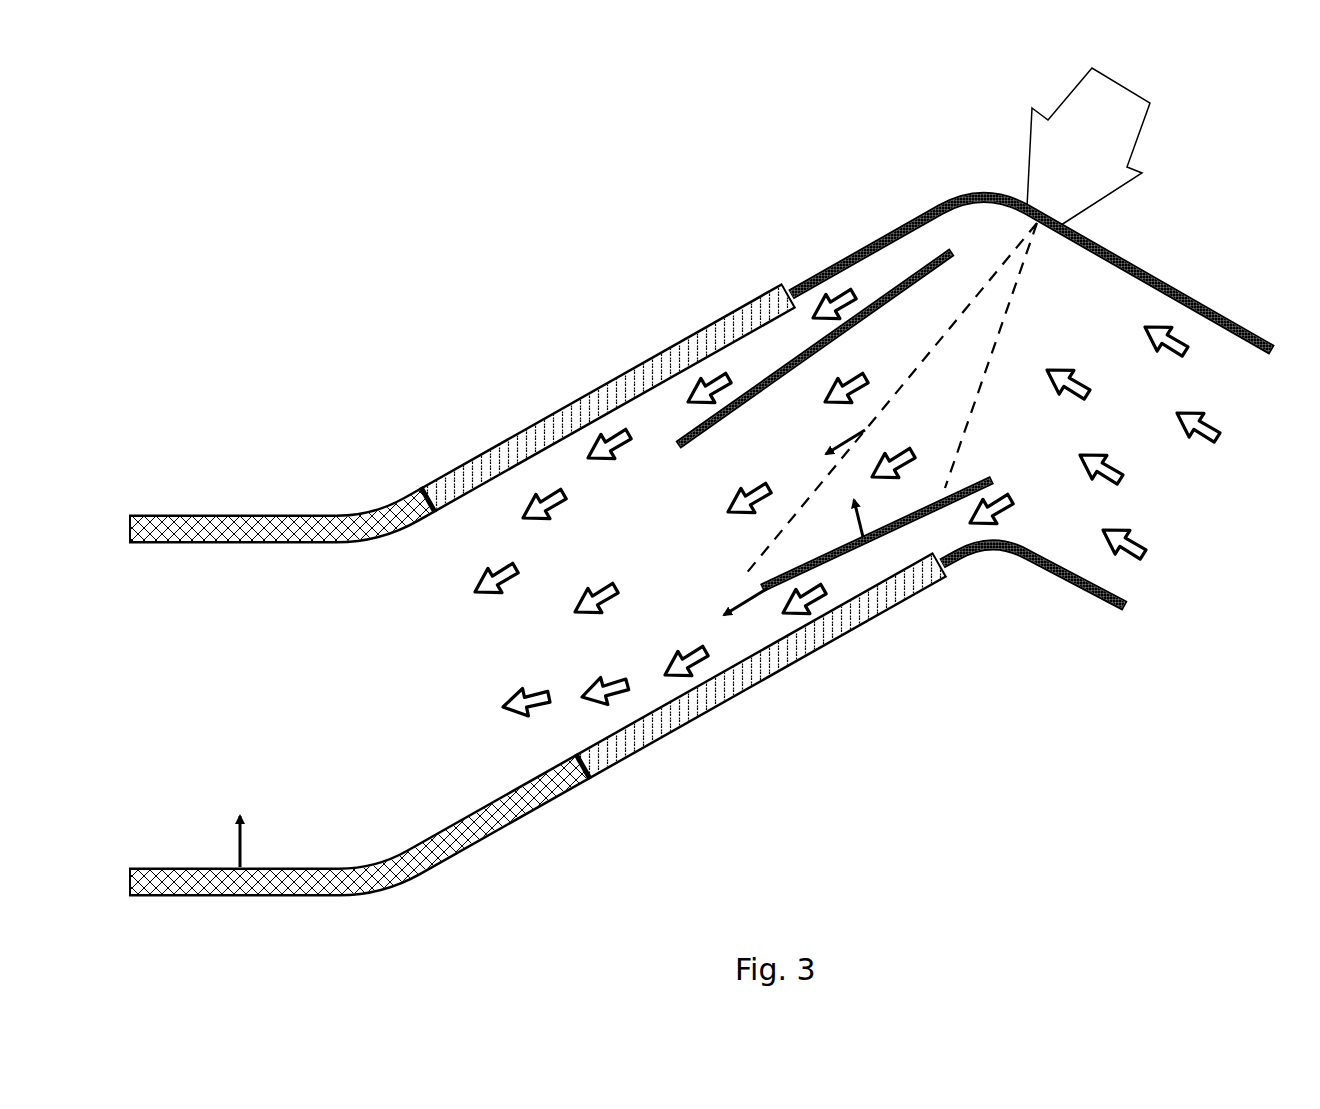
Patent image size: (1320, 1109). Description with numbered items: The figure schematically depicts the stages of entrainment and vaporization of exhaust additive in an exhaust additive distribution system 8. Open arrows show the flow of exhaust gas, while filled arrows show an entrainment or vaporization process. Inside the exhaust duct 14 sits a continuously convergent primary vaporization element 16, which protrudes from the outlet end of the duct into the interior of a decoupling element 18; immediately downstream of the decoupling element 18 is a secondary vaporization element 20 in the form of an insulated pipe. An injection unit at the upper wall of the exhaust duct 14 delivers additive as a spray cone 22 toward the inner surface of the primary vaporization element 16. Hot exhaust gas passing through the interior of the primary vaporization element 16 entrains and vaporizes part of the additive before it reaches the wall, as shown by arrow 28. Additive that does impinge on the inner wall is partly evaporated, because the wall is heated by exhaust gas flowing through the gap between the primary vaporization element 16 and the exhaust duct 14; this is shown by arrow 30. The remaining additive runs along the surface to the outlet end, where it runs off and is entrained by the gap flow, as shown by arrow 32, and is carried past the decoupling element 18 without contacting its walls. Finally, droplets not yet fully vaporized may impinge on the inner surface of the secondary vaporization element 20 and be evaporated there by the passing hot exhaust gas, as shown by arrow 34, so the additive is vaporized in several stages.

The exhaust additive distribution system 8 is at (482, 354).
The exhaust duct 14 is at (1060, 575).
The primary vaporization element 16 is at (910, 282).
The decoupling element 18 is at (717, 708).
The secondary vaporization element 20 is at (312, 512).
The spray cone 22 is at (953, 467).
The arrow depicting entrainment and vaporization 28 is at (845, 440).
The arrow depicting wall evaporation 30 is at (857, 526).
The arrow depicting run-off entrainment 32 is at (737, 600).
The arrow depicting secondary evaporation 34 is at (243, 838).